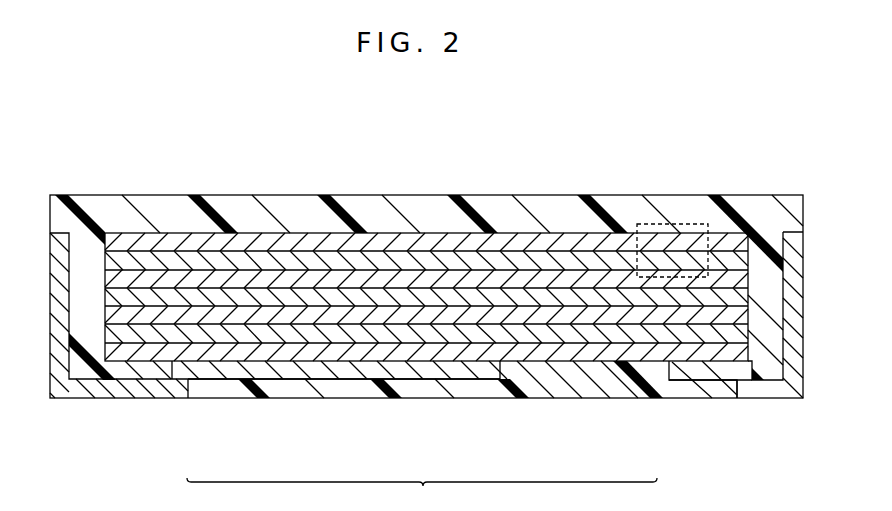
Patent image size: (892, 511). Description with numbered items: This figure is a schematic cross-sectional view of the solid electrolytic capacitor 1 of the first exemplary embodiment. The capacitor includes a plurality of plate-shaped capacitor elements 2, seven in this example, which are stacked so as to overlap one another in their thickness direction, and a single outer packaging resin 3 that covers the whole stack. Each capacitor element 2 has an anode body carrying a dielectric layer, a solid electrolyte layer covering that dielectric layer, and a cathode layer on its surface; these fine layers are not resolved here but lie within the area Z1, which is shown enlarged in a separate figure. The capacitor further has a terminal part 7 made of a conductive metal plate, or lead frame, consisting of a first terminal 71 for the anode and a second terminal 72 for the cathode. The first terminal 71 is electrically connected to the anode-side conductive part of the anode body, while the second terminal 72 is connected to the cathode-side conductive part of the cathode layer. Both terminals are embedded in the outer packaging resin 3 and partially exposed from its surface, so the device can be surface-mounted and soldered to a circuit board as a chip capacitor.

The solid electrolytic capacitor 1 is at (343, 188).
The capacitor element 2 is at (502, 242).
The outer packaging resin 3 is at (757, 195).
The area Z1 is at (683, 222).
The terminal part 7 is at (422, 494).
The first terminal 71 is at (738, 382).
The second terminal 72 is at (170, 390).